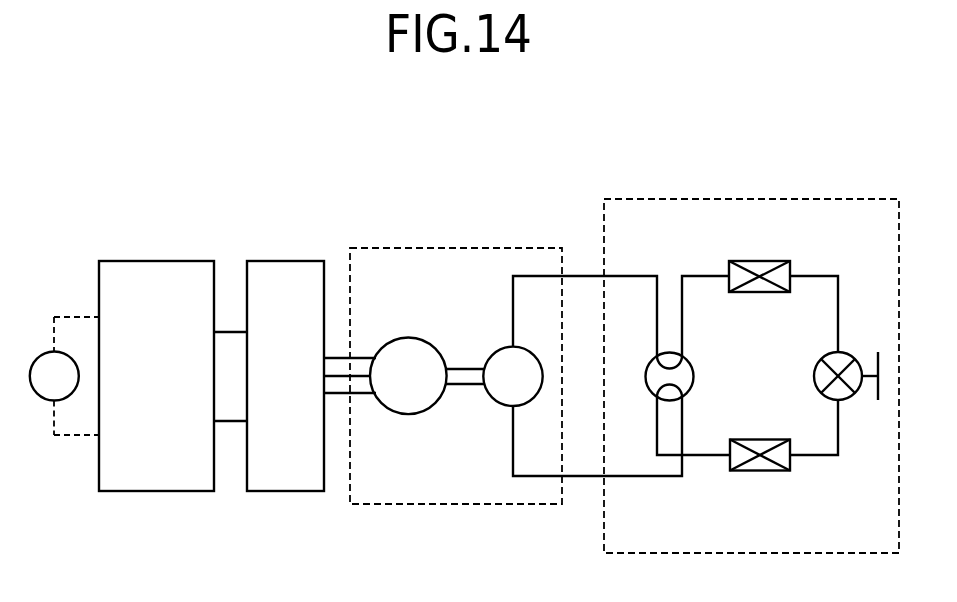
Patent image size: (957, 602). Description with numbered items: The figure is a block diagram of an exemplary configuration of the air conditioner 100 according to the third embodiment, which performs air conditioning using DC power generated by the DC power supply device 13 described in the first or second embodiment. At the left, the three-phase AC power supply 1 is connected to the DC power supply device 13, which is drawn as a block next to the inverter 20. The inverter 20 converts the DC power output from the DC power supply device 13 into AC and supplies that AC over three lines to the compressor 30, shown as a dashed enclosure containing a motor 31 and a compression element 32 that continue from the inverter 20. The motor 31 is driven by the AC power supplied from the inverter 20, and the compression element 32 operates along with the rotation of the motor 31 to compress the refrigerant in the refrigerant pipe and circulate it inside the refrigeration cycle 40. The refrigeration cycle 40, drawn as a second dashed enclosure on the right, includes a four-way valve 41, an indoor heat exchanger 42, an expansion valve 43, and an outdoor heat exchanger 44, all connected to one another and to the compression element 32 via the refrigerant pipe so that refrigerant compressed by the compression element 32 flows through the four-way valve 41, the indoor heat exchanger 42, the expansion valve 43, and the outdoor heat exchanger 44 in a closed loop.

The air conditioner 100 is at (575, 134).
The three-phase AC power supply 1 is at (52, 352).
The DC power supply device 13 is at (154, 260).
The inverter 20 is at (282, 260).
The compressor 30 is at (455, 248).
The motor 31 is at (406, 338).
The compression element 32 is at (507, 346).
The refrigeration cycle 40 is at (863, 198).
The four-way valve 41 is at (694, 377).
The indoor heat exchanger 42 is at (757, 261).
The expansion valve 43 is at (849, 356).
The outdoor heat exchanger 44 is at (761, 471).